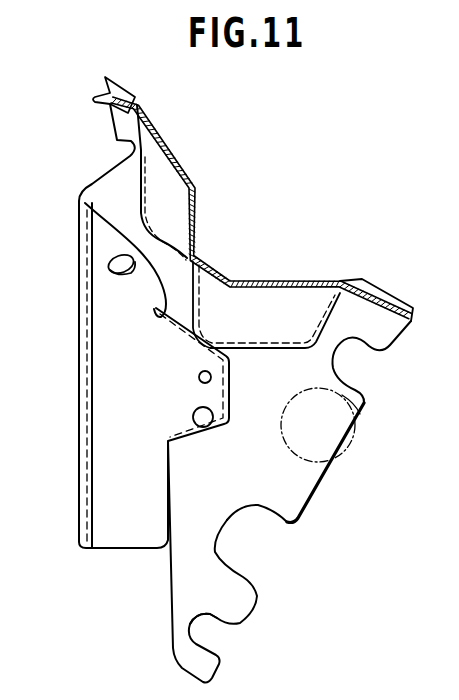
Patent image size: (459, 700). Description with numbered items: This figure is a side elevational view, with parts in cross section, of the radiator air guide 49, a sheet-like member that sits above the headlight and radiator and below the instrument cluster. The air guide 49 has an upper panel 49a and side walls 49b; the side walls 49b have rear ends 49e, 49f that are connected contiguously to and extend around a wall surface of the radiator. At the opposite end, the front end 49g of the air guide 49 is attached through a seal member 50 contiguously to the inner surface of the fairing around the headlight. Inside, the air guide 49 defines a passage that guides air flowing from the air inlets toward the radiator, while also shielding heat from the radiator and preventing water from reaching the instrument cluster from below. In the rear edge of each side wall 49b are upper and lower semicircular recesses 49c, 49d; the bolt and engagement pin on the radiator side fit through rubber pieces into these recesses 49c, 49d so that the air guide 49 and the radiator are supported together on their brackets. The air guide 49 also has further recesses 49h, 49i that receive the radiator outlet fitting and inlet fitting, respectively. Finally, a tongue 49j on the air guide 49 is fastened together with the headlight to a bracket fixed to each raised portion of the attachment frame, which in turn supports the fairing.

The radiator air guide 49 is at (193, 173).
The seal member 50 is at (113, 83).
The upper panel 49a is at (261, 281).
The side wall 49b is at (283, 429).
The upper semicircular recess 49c is at (357, 340).
The lower semicircular recess 49d is at (218, 620).
The rear end 49e is at (393, 292).
The rear end 49f is at (312, 491).
The front end 49g is at (106, 98).
The recess 49h is at (272, 516).
The recess 49i is at (345, 396).
The tongue 49j is at (215, 393).